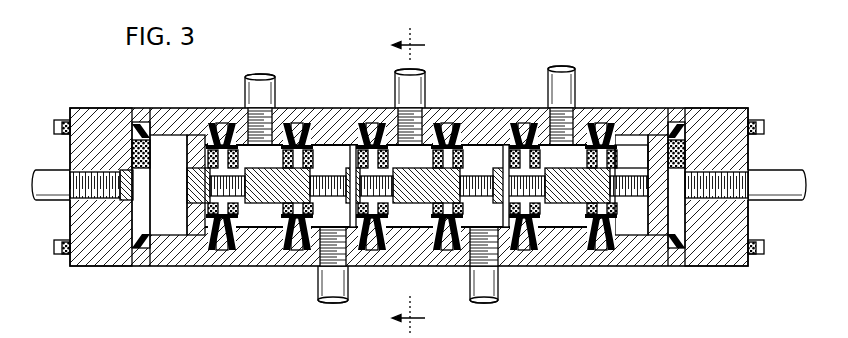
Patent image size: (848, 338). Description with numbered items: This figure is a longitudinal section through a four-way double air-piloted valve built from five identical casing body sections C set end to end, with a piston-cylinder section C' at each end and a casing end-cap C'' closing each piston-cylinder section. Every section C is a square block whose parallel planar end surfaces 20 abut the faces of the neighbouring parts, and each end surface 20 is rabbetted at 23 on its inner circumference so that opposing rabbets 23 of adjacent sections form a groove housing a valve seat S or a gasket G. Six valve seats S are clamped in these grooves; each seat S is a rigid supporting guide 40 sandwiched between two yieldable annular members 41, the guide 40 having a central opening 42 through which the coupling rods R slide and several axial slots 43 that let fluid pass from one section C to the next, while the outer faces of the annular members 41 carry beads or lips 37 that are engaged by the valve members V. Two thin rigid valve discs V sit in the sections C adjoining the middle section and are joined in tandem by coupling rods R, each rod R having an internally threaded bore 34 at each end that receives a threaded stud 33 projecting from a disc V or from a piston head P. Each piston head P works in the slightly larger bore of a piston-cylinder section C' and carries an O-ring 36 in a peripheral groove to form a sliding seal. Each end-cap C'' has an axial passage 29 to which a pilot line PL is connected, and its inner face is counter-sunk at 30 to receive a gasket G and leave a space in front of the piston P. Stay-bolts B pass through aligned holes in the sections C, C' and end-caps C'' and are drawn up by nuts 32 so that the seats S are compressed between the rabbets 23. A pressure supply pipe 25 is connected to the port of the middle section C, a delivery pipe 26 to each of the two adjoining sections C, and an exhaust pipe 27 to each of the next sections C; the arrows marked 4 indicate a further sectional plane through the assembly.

The planar end surfaces 20 is at (238, 268).
The rabbet 23 is at (104, 285).
The supply pipe 25 is at (415, 92).
The delivery pipe 26 is at (340, 292).
The exhaust pipe 27 is at (268, 100).
The passage or port 29 is at (100, 197).
The counter-sunk portion 30 is at (142, 183).
The nuts 32 is at (66, 122).
The threaded studs 33 is at (562, 200).
The internally threaded bore 34 is at (195, 247).
The O-ring 36 is at (140, 245).
The bead or lip 37 is at (300, 222).
The supporting guide 40 is at (212, 260).
The annular members 41 is at (232, 222).
The central opening 42 is at (405, 178).
The openings or slots 43 is at (385, 222).
The section line 4- 4 is at (417, 182).
The stay-bolt B is at (58, 127).
The casing body section C is at (409, 174).
The piston-cylinder section C' is at (418, 154).
The casing end-cap C'' is at (409, 166).
The gasket G is at (142, 125).
The piston head P is at (190, 158).
The pilot line PL is at (42, 180).
The valve coupling rod R is at (280, 180).
The valve seat S is at (218, 122).
The valve member V is at (350, 159).